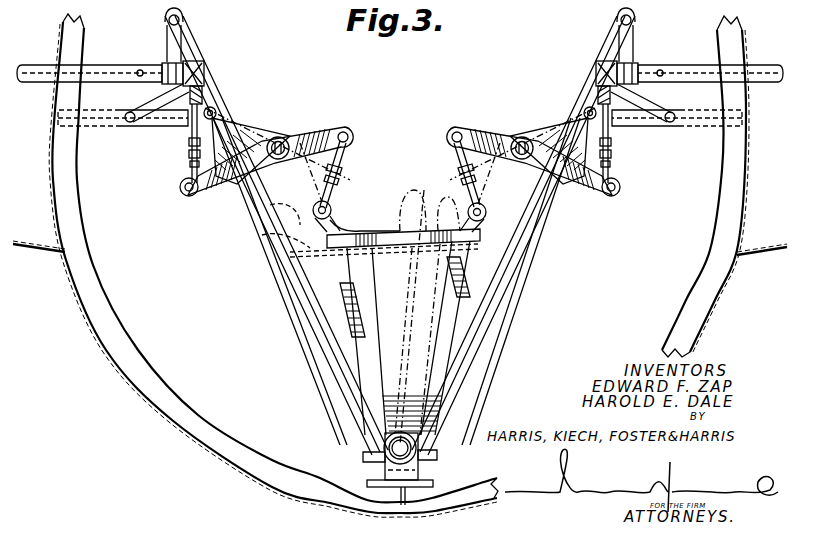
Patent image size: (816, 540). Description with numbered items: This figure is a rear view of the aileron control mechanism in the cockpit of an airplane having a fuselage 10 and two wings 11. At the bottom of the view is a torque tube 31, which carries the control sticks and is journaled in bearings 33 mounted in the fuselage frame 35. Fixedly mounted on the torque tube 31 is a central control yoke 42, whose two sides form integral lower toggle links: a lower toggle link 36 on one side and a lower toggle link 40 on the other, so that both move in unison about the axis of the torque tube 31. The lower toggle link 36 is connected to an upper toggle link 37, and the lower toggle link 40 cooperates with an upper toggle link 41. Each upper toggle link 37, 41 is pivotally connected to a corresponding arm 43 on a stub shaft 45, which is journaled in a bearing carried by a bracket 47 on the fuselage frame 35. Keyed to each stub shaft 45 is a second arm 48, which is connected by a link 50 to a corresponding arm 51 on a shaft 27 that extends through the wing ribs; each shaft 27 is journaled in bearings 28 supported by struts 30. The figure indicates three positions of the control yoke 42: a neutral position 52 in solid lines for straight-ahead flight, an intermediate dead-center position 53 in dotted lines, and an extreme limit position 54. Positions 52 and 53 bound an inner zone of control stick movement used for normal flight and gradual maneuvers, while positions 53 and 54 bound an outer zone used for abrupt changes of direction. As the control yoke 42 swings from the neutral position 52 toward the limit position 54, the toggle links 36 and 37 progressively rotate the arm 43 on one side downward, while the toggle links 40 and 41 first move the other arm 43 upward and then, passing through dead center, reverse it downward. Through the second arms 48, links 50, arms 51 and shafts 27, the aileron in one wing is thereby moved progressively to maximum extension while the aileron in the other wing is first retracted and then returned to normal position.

The fuselage 10 is at (112, 382).
The wings 11 is at (40, 254).
The shaft 27 is at (40, 72).
The bearings 28 is at (633, 65).
The struts 30 is at (170, 49).
The torque tube 31 is at (384, 447).
The bearings 33 is at (385, 457).
The fuselage frame 35 is at (532, 246).
The lower toggle link 36 is at (338, 292).
The upper toggle link 37 is at (342, 160).
The lower toggle link 40 is at (468, 274).
The upper toggle link 41 is at (450, 156).
The central control yoke 42 is at (413, 398).
The arm 43 is at (323, 130).
The stub shaft 45 is at (281, 141).
The bracket 47 is at (253, 132).
The second arm 48 is at (186, 193).
The link 50 is at (188, 157).
The arm 51 is at (205, 85).
The neutral position 52 is at (332, 205).
The dead-center position 53 is at (285, 216).
The limit position 54 is at (263, 237).